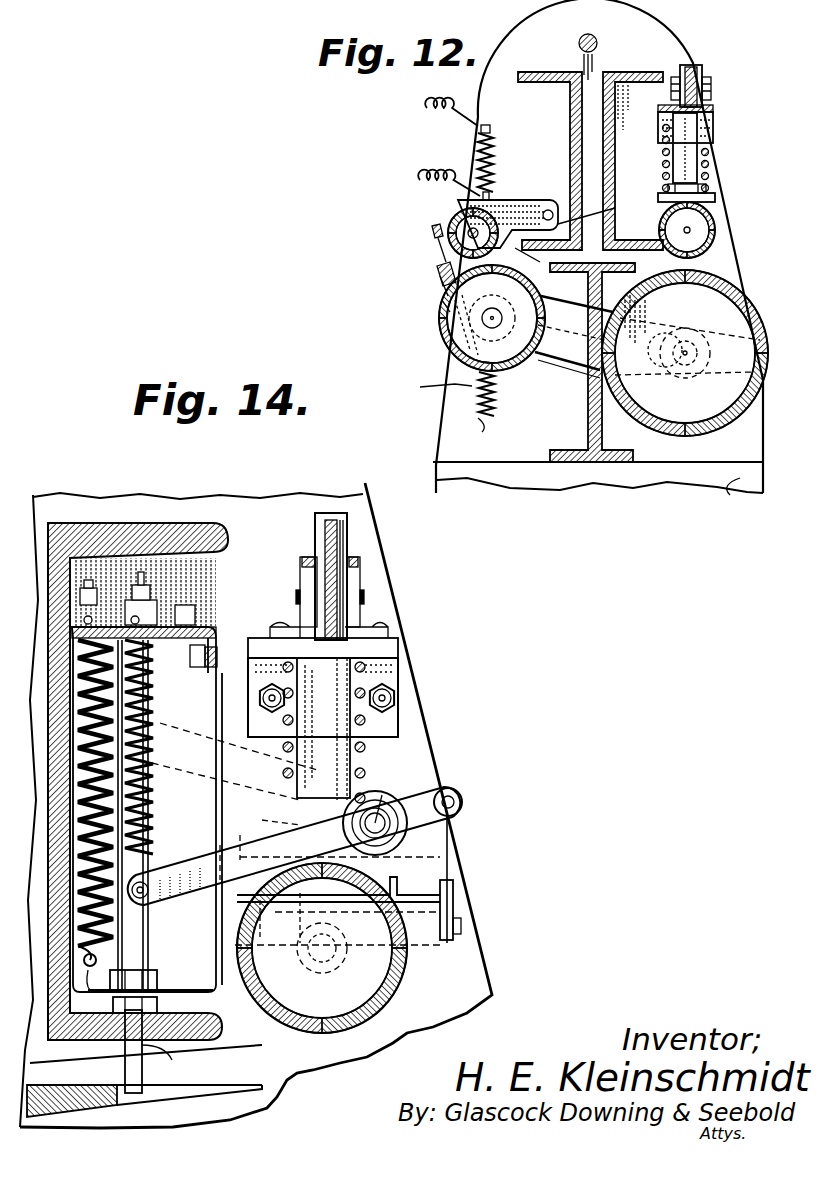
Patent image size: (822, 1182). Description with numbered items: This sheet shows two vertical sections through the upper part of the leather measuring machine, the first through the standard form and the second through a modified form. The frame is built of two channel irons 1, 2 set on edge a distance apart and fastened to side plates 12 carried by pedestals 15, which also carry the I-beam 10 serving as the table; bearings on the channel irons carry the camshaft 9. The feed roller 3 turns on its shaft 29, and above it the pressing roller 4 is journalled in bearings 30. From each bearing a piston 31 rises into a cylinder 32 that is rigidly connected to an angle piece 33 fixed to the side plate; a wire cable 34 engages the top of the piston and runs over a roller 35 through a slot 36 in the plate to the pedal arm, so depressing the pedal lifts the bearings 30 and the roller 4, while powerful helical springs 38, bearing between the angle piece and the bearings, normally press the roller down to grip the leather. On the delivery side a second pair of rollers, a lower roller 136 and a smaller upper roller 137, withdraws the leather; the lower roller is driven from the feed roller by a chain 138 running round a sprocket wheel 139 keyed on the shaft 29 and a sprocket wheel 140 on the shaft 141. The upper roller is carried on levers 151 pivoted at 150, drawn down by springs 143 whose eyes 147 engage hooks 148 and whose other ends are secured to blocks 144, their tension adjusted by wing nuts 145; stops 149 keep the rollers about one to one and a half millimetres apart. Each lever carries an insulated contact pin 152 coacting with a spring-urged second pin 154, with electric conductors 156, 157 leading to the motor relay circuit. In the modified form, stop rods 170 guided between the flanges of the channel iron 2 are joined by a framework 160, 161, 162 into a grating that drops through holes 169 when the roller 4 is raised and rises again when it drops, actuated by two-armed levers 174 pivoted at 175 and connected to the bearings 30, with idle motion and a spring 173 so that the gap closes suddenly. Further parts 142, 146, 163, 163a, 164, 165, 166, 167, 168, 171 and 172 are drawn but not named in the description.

In FIG. 12, the channel iron 1 is at (568, 100).
In FIG. 12, the channel iron 2 is at (640, 72).
In FIG. 14, the channel iron 2 is at (130, 532).
In FIG. 12, the feed roller 3 is at (752, 284).
In FIG. 12, the pressing roller 4 is at (715, 230).
In FIG. 12, the camshaft 9 is at (600, 36).
In FIG. 12, the I-beam 10 is at (572, 272).
In FIG. 14, the I-beam 10 is at (68, 1097).
In FIG. 12, the side plate 12 is at (690, 60).
In FIG. 14, the side plate 12 is at (295, 510).
In FIG. 12, the pedestal 15 is at (736, 496).
In FIG. 12, the shaft of the feed roller 29 is at (745, 310).
In FIG. 14, the shaft of the feed roller 29 is at (300, 555).
In FIG. 12, the bearing 30 is at (715, 203).
In FIG. 14, the bearing 30 is at (357, 895).
In FIG. 12, the piston 31 is at (706, 190).
In FIG. 14, the piston 31 is at (360, 823).
In FIG. 12, the cylinder 32 is at (697, 162).
In FIG. 14, the cylinder 32 is at (340, 720).
In FIG. 12, the angle piece 33 is at (713, 136).
In FIG. 14, the angle piece 33 is at (398, 682).
In FIG. 12, the wire cable 34 is at (713, 110).
In FIG. 14, the wire cable 34 is at (360, 612).
In FIG. 12, the roller 35 is at (702, 76).
In FIG. 14, the roller 35 is at (337, 540).
In FIG. 12, the slot 36 is at (702, 66).
In FIG. 14, the slot 36 is at (347, 518).
In FIG. 12, the helical spring 38 is at (710, 148).
In FIG. 14, the helical spring 38 is at (366, 770).
In FIG. 12, the lower delivery roller 136 is at (452, 338).
In FIG. 12, the upper delivery roller 137 is at (445, 215).
In FIG. 12, the chain 138 is at (556, 362).
In FIG. 12, the sprocket wheel 139 is at (740, 372).
In FIG. 12, the sprocket wheel 140 is at (492, 318).
In FIG. 12, the shaft of the lower delivery roller 141 is at (560, 337).
In FIG. 12, the arm 142 is at (520, 256).
In FIG. 12, the spring 143 is at (428, 396).
In FIG. 12, the block 144 is at (467, 430).
In FIG. 12, the wing nut 145 is at (494, 414).
In FIG. 12, the pawl 146 is at (442, 302).
In FIG. 12, the eye 147 is at (430, 236).
In FIG. 12, the hook 148 is at (438, 270).
In FIG. 12, the stop 149 is at (440, 284).
In FIG. 12, the pivot 150 is at (551, 207).
In FIG. 12, the lever 151 is at (622, 207).
In FIG. 12, the contact pin 152 is at (489, 196).
In FIG. 12, the contact pin 154 is at (494, 170).
In FIG. 12, the electric conductor 156 is at (444, 121).
In FIG. 12, the electric conductor 157 is at (429, 188).
In FIG. 14, the framework 160 is at (216, 630).
In FIG. 14, the framework 161 is at (210, 672).
In FIG. 14, the framework 162 is at (200, 968).
In FIG. 14, the spring 163 is at (150, 800).
In FIG. 14, the spring end 163a is at (93, 989).
In FIG. 14, the nut 164 is at (160, 615).
In FIG. 14, the spring 165 is at (155, 717).
In FIG. 14, the nut 166 is at (150, 600).
In FIG. 14, the nut 167 is at (140, 980).
In FIG. 14, the frame 168 is at (90, 520).
In FIG. 14, the hole 169 is at (179, 1057).
In FIG. 14, the stop rod 170 is at (136, 1068).
In FIG. 14, the wedge 171 is at (218, 1085).
In FIG. 14, the lever 172 is at (150, 850).
In FIG. 14, the spring 173 is at (153, 815).
In FIG. 14, the two-armed lever 174 is at (229, 852).
In FIG. 14, the pivot 175 is at (440, 800).